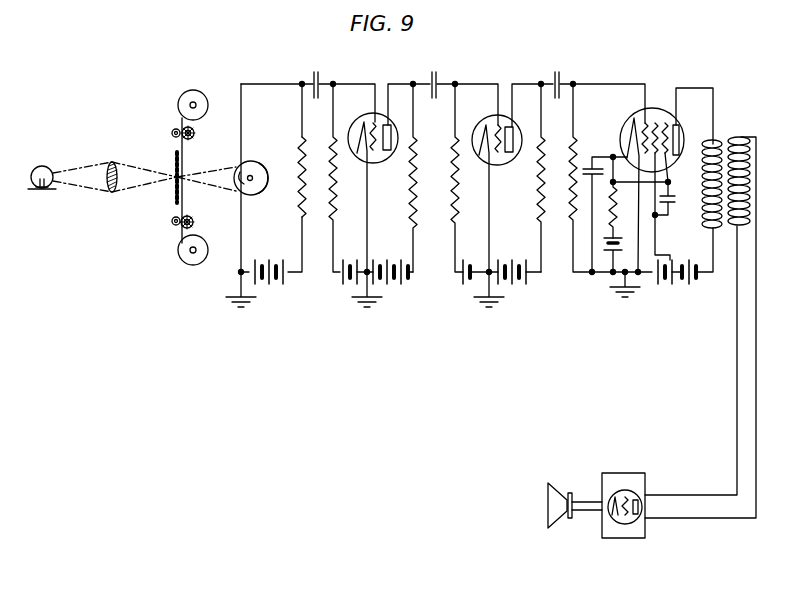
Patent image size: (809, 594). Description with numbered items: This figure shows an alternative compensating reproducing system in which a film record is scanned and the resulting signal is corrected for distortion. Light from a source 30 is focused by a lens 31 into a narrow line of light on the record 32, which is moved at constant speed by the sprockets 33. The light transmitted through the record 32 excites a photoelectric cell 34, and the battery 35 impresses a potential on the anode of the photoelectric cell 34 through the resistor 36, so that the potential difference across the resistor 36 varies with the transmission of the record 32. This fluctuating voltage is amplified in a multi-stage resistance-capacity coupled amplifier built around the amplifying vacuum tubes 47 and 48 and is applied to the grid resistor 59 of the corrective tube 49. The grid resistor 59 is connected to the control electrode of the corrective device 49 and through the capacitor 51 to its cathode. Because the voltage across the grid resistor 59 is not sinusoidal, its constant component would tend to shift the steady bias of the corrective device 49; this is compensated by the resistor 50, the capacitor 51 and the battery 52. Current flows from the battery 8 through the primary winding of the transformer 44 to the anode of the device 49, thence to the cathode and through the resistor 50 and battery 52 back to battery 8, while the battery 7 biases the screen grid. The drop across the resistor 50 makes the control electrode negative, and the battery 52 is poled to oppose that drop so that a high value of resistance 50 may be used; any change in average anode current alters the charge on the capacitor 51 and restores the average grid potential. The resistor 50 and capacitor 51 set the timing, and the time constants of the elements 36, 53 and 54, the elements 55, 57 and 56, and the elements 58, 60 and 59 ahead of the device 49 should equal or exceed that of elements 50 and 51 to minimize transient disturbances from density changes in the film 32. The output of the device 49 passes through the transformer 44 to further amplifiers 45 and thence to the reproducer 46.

The light source 30 is at (45, 166).
The lens 31 is at (114, 161).
The record 32 is at (184, 208).
The sprockets 33 is at (195, 223).
The photoelectric cell 34 is at (257, 198).
The battery 35 is at (271, 286).
The resistor 36 is at (299, 146).
The amplifying vacuum tube 47 is at (370, 114).
The amplifying vacuum tube 48 is at (496, 117).
The corrective tube 49 is at (640, 114).
The resistor 50 is at (609, 223).
The capacitor 51 is at (590, 166).
The battery 52 is at (604, 251).
The coupling capacitor 53 is at (318, 73).
The resistor 54 is at (334, 216).
The resistor 55 is at (411, 214).
The resistor 56 is at (453, 214).
The coupling capacitor 57 is at (437, 74).
The resistor 58 is at (538, 192).
The grid resistor 59 is at (569, 209).
The coupling capacitor 60 is at (560, 74).
The battery 7 is at (662, 286).
The battery 8 is at (689, 286).
The transformer 44 is at (726, 136).
The further amplifiers 45 is at (626, 539).
The reproducer 46 is at (560, 522).